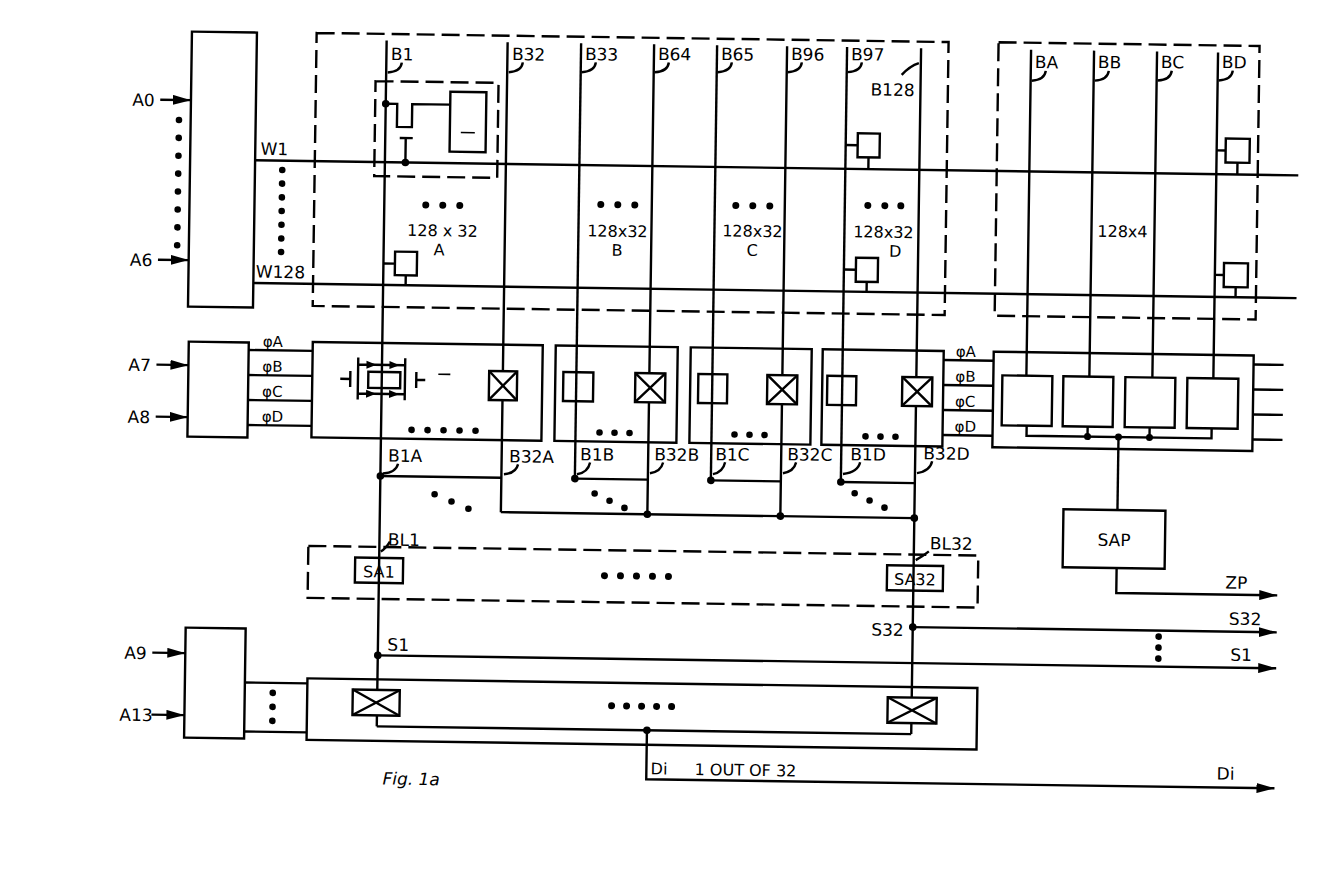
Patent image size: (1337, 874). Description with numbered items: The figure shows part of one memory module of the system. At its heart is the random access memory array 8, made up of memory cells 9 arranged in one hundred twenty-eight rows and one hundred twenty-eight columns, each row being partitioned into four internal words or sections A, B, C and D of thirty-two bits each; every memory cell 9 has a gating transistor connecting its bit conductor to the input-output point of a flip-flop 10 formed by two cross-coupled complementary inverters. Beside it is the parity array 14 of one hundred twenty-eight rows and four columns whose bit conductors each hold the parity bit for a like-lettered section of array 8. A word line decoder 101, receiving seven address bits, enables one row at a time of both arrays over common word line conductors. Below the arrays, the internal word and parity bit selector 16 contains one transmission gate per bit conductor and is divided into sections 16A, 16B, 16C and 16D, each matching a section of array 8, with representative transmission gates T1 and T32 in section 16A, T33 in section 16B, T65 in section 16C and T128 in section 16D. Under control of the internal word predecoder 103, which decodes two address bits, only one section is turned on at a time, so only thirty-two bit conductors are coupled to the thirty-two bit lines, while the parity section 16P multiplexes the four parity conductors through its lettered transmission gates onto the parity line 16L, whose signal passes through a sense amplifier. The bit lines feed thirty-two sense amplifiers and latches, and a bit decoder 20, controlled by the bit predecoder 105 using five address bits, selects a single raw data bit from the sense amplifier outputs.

The word line decoder 101 is at (188, 69).
The random access memory array 8 is at (315, 73).
The memory cell 9 is at (812, 179).
The flip-flop 10 is at (449, 87).
The parity array 14 is at (1257, 80).
The internal word predecoder 103 is at (217, 390).
The internal word and parity bit selector 16 is at (1319, 409).
The selector section A 16A is at (426, 391).
The selector section B 16B is at (615, 393).
The selector section C 16C is at (750, 395).
The selector section D 16D is at (882, 397).
The parity selector section 16P is at (1242, 443).
The parity line 16L is at (1121, 492).
The bit predecoder 105 is at (215, 683).
The bit decoder 20 is at (338, 746).
The transmission gate T1 is at (418, 377).
The transmission gate T32 is at (486, 379).
The transmission gate T33 is at (612, 380).
The transmission gate T65 is at (746, 379).
The transmission gate T128 is at (900, 380).